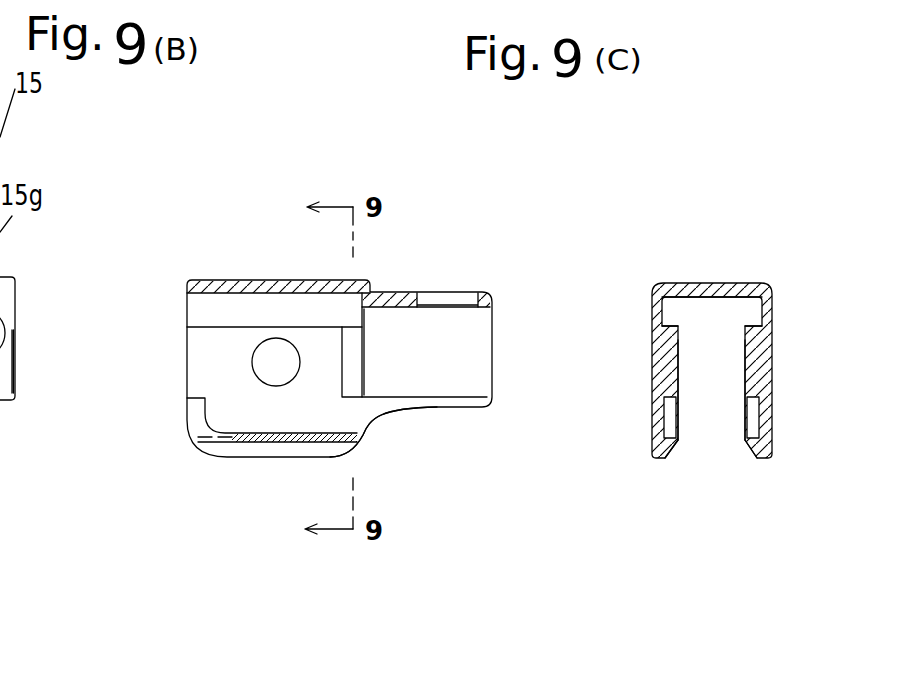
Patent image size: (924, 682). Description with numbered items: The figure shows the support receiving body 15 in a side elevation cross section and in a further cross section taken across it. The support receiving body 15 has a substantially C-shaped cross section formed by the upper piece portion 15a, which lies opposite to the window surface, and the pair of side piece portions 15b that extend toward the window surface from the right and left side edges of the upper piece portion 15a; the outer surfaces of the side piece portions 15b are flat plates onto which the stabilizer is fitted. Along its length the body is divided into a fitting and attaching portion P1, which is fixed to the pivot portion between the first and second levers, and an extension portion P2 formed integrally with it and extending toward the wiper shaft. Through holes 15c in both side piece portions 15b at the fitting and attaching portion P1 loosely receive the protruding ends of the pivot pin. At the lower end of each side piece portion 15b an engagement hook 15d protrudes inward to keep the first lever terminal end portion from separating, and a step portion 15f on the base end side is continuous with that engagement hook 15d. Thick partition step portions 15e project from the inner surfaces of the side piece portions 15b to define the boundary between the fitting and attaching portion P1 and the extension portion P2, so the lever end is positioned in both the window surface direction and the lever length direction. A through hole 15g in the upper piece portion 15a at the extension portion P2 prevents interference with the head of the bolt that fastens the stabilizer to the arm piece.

In FIG. 9B, the support receiving body 15 is at (406, 164).
In FIG. 9C, the support receiving body 15 is at (779, 239).
In FIG. 9B, the upper piece portion 15a is at (278, 283).
In FIG. 9C, the upper piece portion 15a is at (712, 283).
In FIG. 9B, the side piece portions 15b is at (378, 412).
In FIG. 9C, the side piece portions 15b is at (753, 360).
In FIG. 9B, the through holes 15c is at (253, 362).
In FIG. 9B, the engagement hook 15d is at (260, 462).
In FIG. 9C, the engagement hook 15d is at (662, 458).
In FIG. 9B, the thick partition step portion 15e is at (352, 365).
In FIG. 9C, the thick partition step portion 15e is at (753, 350).
In FIG. 9B, the step portion 15f is at (197, 415).
In FIG. 9C, the step portion 15f is at (753, 421).
In FIG. 9B, the through hole 15g is at (475, 290).
In FIG. 9B, the fitting and attaching portion P1 is at (220, 263).
In FIG. 9B, the extension portion P2 is at (451, 264).